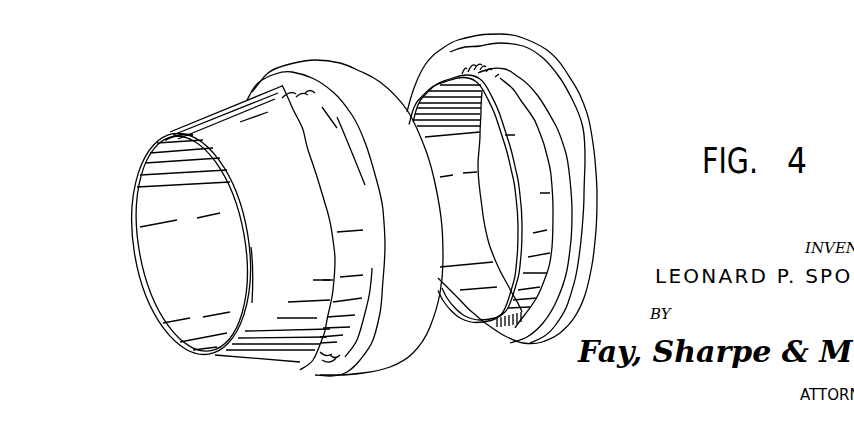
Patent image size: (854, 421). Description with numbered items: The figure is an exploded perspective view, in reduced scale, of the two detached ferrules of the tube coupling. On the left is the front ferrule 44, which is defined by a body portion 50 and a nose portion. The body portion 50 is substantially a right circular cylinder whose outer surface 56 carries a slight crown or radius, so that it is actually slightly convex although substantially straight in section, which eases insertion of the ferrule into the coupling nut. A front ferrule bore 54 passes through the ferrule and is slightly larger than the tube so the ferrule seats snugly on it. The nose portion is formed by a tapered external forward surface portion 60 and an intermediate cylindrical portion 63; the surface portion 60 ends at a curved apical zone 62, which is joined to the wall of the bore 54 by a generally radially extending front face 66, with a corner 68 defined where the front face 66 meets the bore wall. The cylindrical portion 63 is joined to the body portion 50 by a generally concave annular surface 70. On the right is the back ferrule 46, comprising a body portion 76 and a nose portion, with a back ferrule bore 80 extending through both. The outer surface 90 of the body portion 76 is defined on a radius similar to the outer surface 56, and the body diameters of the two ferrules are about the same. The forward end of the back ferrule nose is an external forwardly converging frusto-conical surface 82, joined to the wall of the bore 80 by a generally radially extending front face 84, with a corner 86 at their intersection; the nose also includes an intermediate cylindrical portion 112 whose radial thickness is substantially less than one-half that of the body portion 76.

The front ferrule 44 is at (218, 107).
The back ferrule 46 is at (548, 75).
The body portion 50 is at (311, 93).
The front ferrule bore 54 is at (192, 200).
The outer surface 56 is at (368, 88).
The tapered external forward surface portion 60 is at (203, 117).
The curved apical zone 62 is at (133, 172).
The intermediate cylindrical portion 63 is at (280, 92).
The front face 66 is at (158, 138).
The corner 68 is at (150, 157).
The concave annular surface 70 is at (338, 129).
The body portion 76 is at (537, 318).
The back ferrule bore 80 is at (452, 293).
The frusto-conical surface 82 is at (469, 70).
The front face 84 is at (515, 168).
The corner 86 is at (417, 100).
The outer surface 90 is at (570, 128).
The intermediate cylindrical portion 112 is at (548, 215).